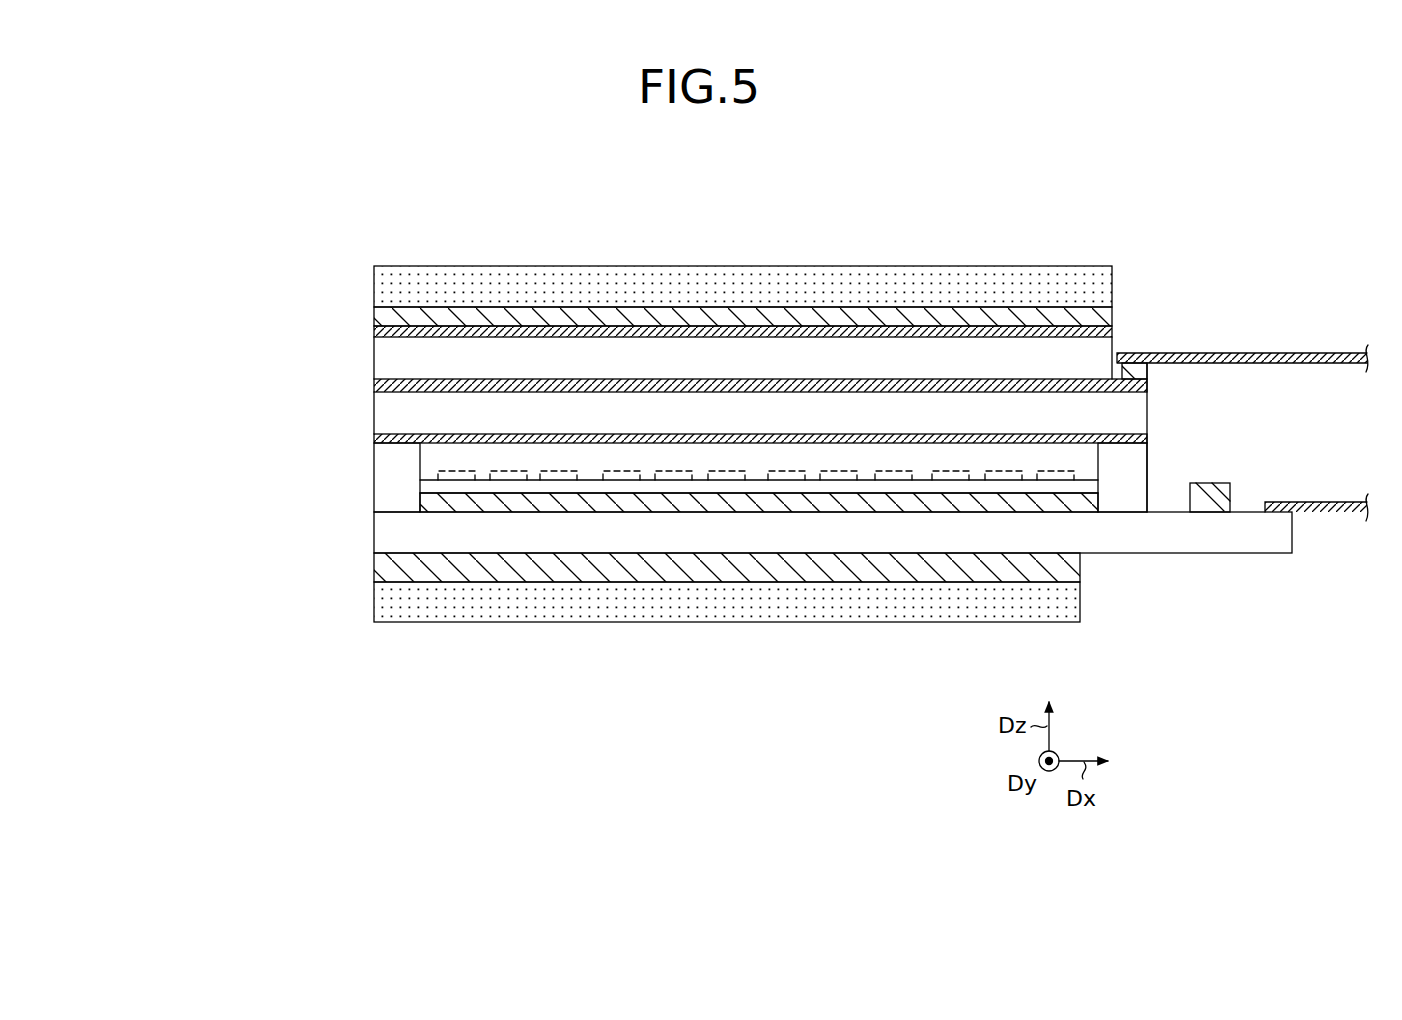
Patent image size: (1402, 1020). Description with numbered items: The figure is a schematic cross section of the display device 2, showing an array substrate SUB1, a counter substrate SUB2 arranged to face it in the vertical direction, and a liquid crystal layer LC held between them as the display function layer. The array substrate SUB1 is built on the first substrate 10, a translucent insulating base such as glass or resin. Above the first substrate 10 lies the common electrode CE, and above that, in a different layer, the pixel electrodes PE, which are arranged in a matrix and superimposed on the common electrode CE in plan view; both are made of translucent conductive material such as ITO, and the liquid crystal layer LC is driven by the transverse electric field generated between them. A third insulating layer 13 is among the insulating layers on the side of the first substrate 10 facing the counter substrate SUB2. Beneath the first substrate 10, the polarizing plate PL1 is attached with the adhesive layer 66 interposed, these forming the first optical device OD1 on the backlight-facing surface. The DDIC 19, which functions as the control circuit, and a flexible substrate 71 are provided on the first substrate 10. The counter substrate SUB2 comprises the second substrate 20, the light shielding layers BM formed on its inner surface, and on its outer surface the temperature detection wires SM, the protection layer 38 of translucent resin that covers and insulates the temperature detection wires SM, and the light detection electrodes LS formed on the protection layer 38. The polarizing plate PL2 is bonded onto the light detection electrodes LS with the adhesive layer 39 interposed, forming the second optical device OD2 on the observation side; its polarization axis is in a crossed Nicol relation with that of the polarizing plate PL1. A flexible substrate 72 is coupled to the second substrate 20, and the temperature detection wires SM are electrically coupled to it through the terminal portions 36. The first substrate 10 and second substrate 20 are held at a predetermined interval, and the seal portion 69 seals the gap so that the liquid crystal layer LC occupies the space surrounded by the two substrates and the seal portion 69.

The display device 2 is at (1192, 206).
The counter substrate SUB2 is at (145, 165).
The second optical device OD2 is at (210, 165).
The polarizing plate PL2 is at (374, 292).
The adhesive layer 39 is at (374, 318).
The light detection electrodes LS is at (374, 333).
The protection layer 38 is at (413, 364).
The temperature detection wires SM is at (374, 386).
The second substrate 20 is at (385, 413).
The light shielding layers BM is at (374, 438).
The liquid crystal layer LC is at (430, 457).
The array substrate SUB1 is at (210, 490).
The pixel electrodes PE is at (440, 479).
The common electrode CE is at (374, 506).
The first substrate 10 is at (374, 533).
The first optical device OD1 is at (210, 613).
The adhesive layer 66 is at (374, 567).
The polarizing plate PL1 is at (374, 602).
The third insulating layer 13 is at (1090, 488).
The seal portion 69 is at (1138, 483).
The terminal portions 36 is at (1147, 369).
The flexible substrate 72 is at (1328, 352).
The DDIC 19 is at (1228, 500).
The flexible substrate 71 is at (1330, 500).